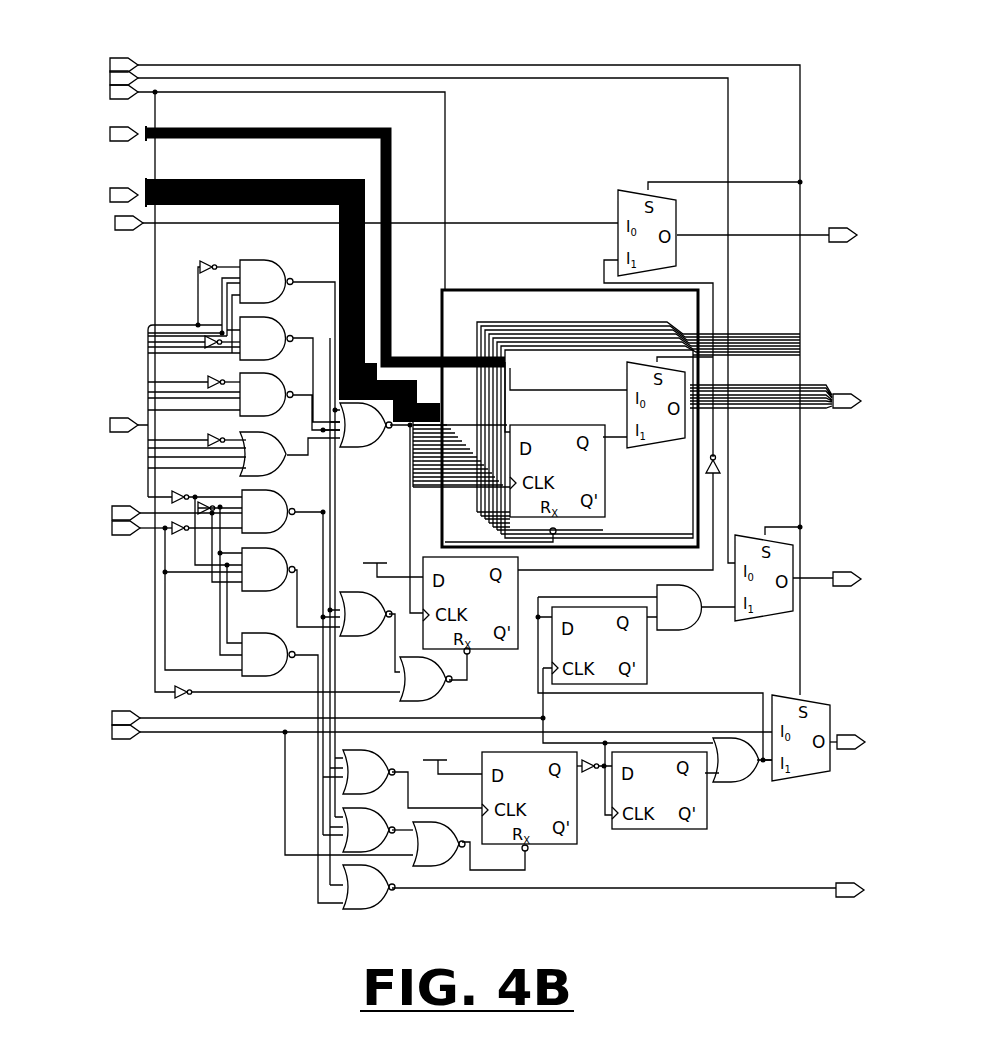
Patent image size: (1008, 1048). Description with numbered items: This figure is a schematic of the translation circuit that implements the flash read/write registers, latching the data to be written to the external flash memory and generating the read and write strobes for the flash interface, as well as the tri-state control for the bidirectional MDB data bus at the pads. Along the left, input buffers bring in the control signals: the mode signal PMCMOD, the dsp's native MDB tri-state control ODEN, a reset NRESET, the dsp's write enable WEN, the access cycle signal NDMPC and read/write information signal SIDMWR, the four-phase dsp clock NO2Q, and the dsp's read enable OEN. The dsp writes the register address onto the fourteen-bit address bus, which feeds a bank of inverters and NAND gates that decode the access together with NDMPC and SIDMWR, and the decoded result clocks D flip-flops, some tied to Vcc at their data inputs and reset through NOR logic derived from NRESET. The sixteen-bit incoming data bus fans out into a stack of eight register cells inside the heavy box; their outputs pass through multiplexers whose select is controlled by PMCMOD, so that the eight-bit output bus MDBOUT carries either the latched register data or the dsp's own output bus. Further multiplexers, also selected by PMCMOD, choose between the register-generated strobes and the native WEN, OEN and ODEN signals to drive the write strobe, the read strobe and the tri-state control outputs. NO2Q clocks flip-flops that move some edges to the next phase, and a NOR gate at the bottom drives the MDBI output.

The mode switch signal PMCMOD is at (183, 62).
The MDB bus tri-state control ODEN is at (205, 77).
The NRESET input signal NRESET is at (220, 91).
The dsp write enable WEN is at (176, 226).
The data access cycle signal NDMPC is at (140, 514).
The read/write information signal SIDMWR is at (96, 529).
The four-phase dsp clock NO2Q is at (299, 718).
The dsp read enable OEN is at (417, 733).
The MDBOUT data bus MDBOUT is at (793, 387).
The MDBI output MDBI is at (654, 891).
The supply voltage Vcc is at (422, 658).